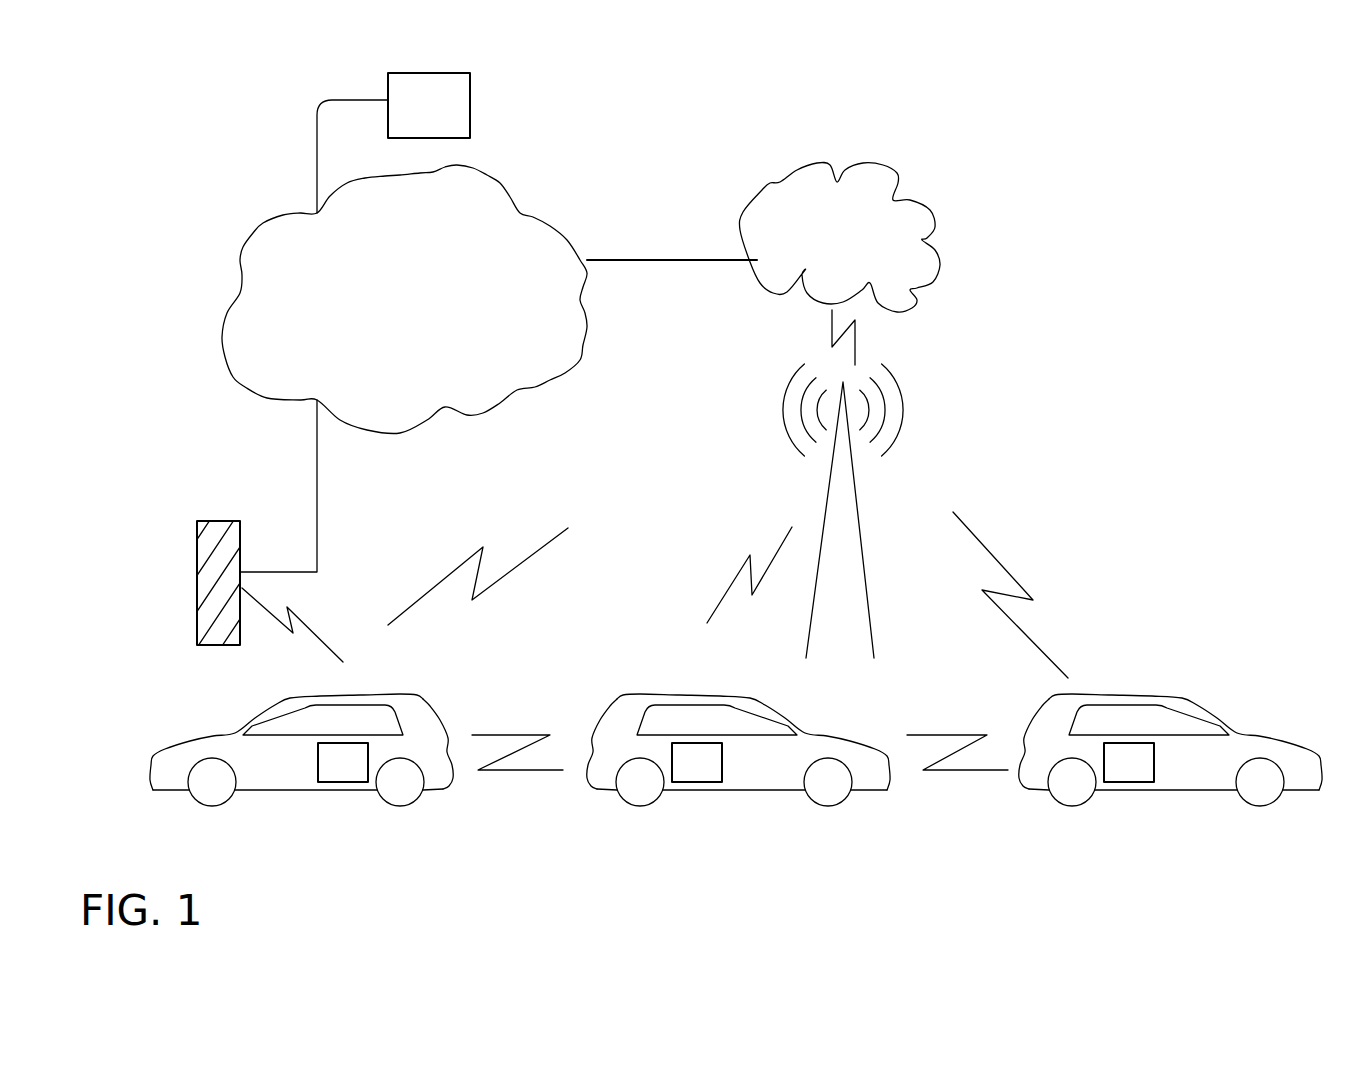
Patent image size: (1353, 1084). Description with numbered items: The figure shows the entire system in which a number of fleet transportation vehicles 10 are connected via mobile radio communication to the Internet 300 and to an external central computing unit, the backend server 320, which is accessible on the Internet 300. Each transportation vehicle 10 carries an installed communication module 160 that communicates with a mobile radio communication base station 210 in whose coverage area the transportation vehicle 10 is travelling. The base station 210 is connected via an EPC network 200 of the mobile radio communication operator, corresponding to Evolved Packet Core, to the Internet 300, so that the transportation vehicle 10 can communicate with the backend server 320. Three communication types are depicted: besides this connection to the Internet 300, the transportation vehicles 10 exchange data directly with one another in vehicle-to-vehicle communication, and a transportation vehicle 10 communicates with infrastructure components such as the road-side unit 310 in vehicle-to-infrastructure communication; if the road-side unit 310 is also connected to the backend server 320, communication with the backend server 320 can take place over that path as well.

The transportation vehicle 10 is at (272, 766).
The communication module 160 is at (347, 766).
The EPC network 200 is at (877, 178).
The mobile radio communication base station 210 is at (855, 488).
The Internet 300 is at (527, 238).
The road-side unit 310 is at (212, 537).
The backend server 320 is at (448, 107).